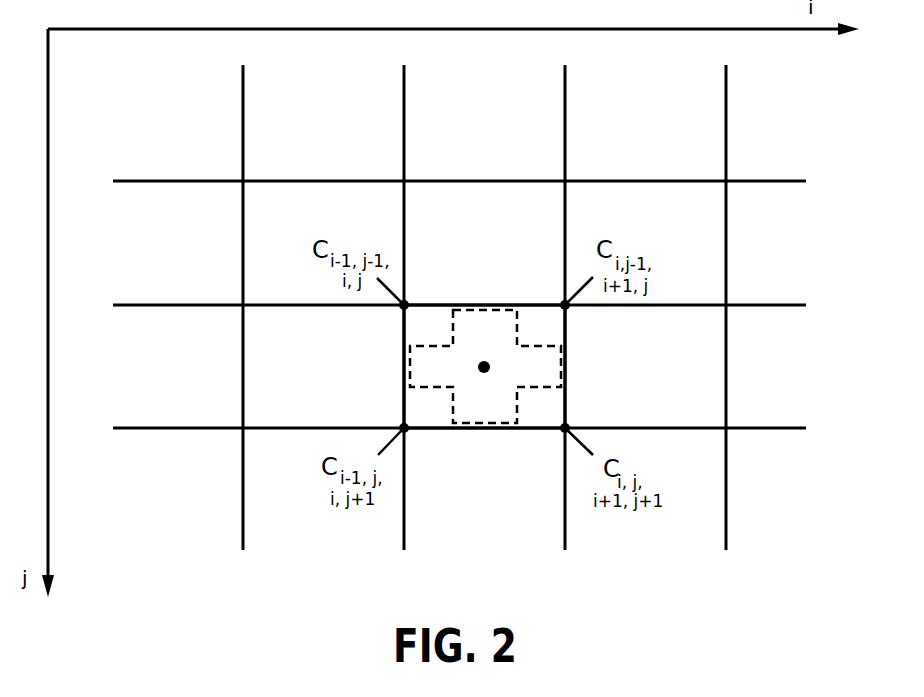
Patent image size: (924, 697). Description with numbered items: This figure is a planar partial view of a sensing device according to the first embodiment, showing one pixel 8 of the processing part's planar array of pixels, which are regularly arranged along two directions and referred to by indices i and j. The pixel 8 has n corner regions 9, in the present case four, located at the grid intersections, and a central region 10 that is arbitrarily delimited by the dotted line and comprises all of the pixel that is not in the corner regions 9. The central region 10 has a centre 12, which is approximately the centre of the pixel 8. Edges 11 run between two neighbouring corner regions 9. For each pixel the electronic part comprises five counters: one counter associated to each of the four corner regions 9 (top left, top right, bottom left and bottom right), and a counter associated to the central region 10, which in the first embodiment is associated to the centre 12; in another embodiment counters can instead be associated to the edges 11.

The pixel 8 is at (420, 354).
The corner regions 9 is at (426, 317).
The central region 10 is at (478, 403).
The edges 11 is at (404, 372).
The centre 12 is at (477, 353).